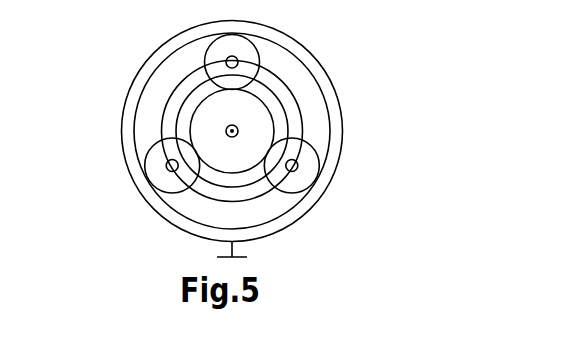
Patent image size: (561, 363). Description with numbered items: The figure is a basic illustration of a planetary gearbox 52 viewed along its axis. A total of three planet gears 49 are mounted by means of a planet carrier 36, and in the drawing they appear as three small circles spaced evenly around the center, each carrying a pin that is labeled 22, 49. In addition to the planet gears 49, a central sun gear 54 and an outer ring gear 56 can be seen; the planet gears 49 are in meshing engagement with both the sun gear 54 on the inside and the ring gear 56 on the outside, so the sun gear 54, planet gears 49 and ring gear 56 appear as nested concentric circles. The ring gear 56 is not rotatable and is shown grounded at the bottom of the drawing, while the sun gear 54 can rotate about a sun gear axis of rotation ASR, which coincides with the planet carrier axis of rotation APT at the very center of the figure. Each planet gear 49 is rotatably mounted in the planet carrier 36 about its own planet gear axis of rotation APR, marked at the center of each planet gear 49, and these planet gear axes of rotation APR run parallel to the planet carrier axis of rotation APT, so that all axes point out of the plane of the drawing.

The ring gear 56 is at (317, 75).
The planet carrier 36 is at (297, 118).
The sun gear 54 is at (217, 123).
The planet gear axis of rotation APR is at (165, 165).
The planet gear 22 is at (319, 198).
The planet gear 49 is at (308, 175).
The planet carrier axis of rotation APT is at (138, 211).
The sun gear axis of rotation ASR is at (231, 138).
The planetary gearbox 52 is at (122, 200).